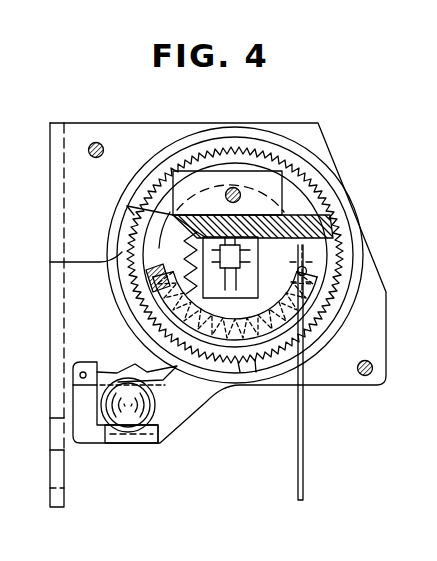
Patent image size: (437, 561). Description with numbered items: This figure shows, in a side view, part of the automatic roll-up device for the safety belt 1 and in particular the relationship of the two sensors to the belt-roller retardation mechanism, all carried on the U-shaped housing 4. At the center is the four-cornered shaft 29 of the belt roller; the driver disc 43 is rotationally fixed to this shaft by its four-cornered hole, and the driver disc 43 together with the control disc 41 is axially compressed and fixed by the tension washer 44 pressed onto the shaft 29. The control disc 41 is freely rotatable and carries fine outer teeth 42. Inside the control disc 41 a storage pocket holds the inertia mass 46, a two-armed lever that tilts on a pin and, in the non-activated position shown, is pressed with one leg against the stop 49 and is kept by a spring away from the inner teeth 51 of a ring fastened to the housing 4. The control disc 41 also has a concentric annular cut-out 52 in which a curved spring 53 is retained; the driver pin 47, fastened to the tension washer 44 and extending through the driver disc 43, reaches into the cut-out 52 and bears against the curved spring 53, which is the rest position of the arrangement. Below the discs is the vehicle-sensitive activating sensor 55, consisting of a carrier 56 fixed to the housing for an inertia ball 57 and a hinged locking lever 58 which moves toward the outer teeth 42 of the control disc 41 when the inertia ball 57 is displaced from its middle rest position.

The safety belt 1 is at (303, 483).
The U-shaped housing 4 is at (50, 300).
The four-cornered shaft 29 is at (240, 262).
The control disc 41 is at (372, 293).
The fine outer teeth 42 is at (350, 274).
The driver disc 43 is at (148, 272).
The tension washer 44 is at (318, 303).
The inertia mass 46 is at (282, 177).
The driver pin 47 is at (233, 188).
The stop 49 is at (317, 215).
The inner teeth 51 is at (187, 158).
The concentric cut-out 52 is at (256, 385).
The curved spring 53 is at (240, 395).
The vehicle-sensitive activating sensor 55 is at (152, 446).
The carrier 56 is at (94, 437).
The inertia ball 57 is at (155, 403).
The locking lever 58 is at (105, 371).